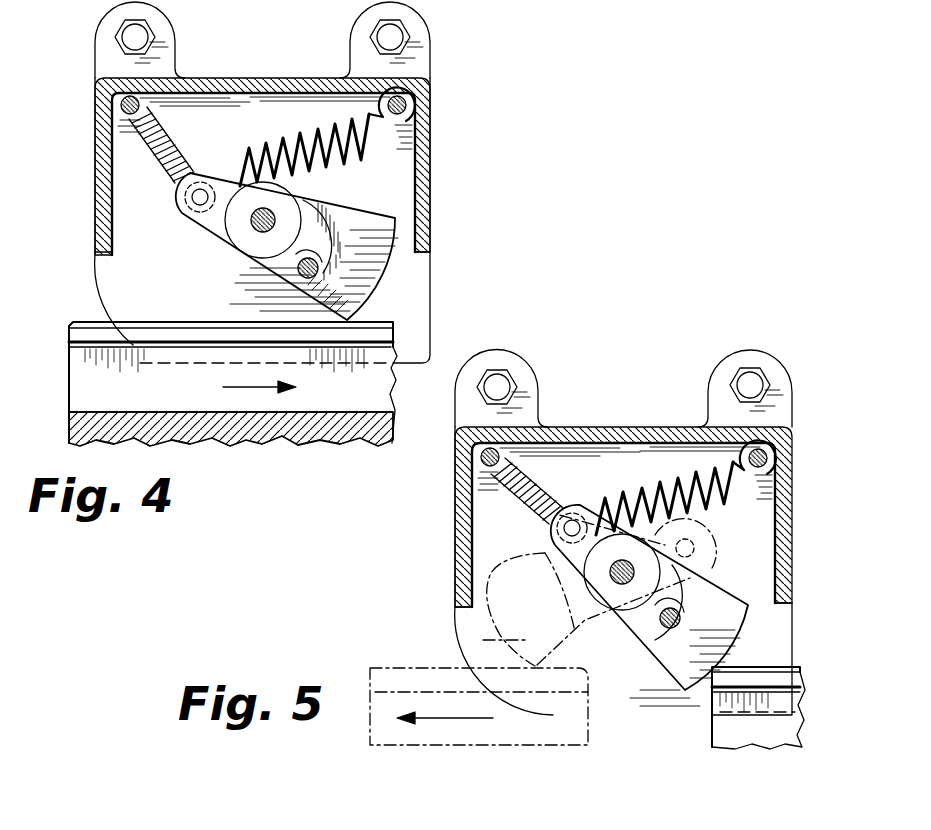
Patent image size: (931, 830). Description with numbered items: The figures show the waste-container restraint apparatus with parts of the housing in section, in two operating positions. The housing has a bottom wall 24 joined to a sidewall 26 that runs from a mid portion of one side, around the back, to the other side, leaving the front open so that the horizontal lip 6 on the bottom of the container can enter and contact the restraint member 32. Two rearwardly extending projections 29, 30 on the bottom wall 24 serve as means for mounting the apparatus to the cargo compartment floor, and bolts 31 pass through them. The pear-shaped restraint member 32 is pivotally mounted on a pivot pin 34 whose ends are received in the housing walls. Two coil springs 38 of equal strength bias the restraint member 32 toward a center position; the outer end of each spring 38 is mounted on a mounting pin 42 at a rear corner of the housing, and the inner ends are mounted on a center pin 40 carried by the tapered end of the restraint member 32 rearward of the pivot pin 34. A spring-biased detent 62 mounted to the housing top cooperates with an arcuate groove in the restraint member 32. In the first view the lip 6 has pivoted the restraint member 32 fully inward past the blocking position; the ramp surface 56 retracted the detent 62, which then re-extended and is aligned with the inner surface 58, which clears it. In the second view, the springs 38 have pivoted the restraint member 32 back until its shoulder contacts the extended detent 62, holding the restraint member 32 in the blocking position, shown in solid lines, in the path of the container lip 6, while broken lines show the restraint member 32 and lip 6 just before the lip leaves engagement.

In FIG. 4, the lip 6 is at (82, 334).
In FIG. 5, the lip 6 is at (763, 680).
In FIG. 4, the bottom wall 24 is at (420, 280).
In FIG. 5, the bottom wall 24 is at (462, 620).
In FIG. 4, the sidewall 26 is at (422, 222).
In FIG. 5, the sidewall 26 is at (458, 540).
In FIG. 4, the rearwardly extending projection 29 is at (95, 52).
In FIG. 5, the rearwardly extending projection 29 is at (455, 393).
In FIG. 4, the rearwardly extending projection 30 is at (430, 48).
In FIG. 5, the rearwardly extending projection 30 is at (784, 364).
In FIG. 4, the bolt 31 is at (370, 36).
In FIG. 5, the bolt 31 is at (502, 372).
In FIG. 4, the restraint member 32 is at (380, 205).
In FIG. 5, the restraint member 32 is at (735, 595).
In FIG. 4, the pivot pin 34 is at (256, 234).
In FIG. 5, the pivot pin 34 is at (620, 598).
In FIG. 4, the coil spring 38 is at (295, 160).
In FIG. 5, the coil spring 38 is at (630, 492).
In FIG. 4, the center pin 40 is at (187, 222).
In FIG. 5, the center pin 40 is at (563, 532).
In FIG. 4, the mounting pin 42 is at (410, 105).
In FIG. 5, the mounting pin 42 is at (482, 458).
In FIG. 5, the ramp surface 56 is at (722, 580).
In FIG. 4, the inner surface 58 is at (296, 277).
In FIG. 5, the inner surface 58 is at (645, 638).
In FIG. 4, the detent 62 is at (307, 292).
In FIG. 5, the detent 62 is at (666, 675).